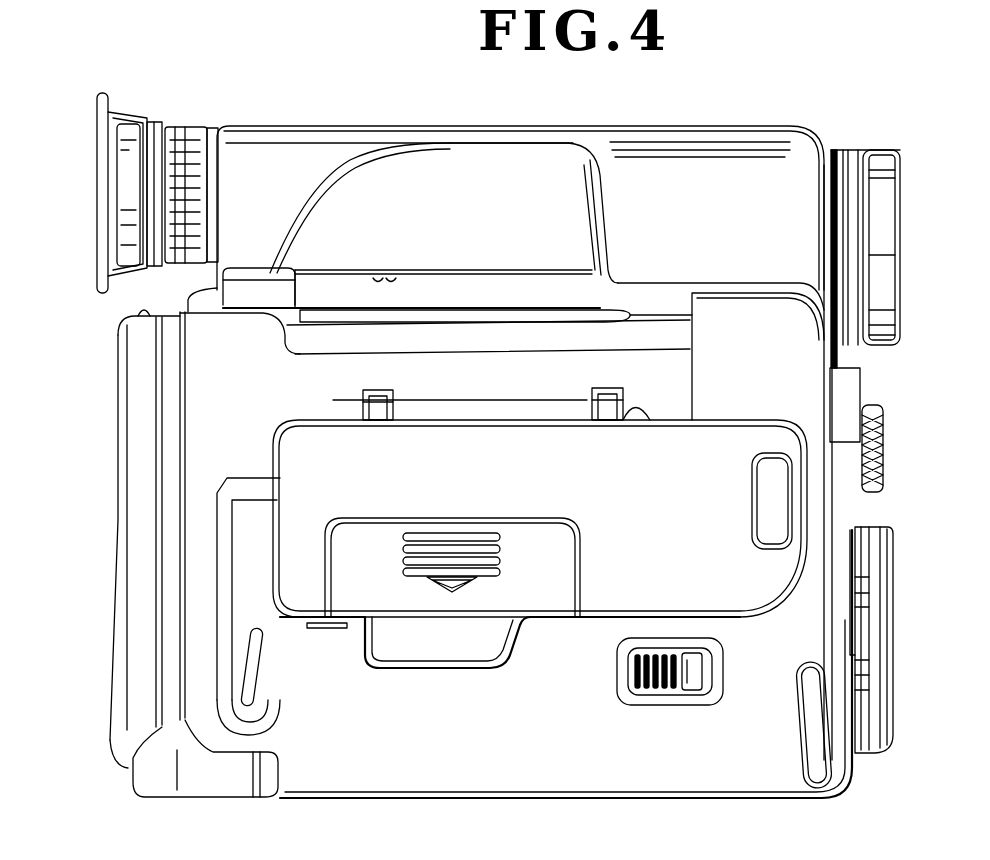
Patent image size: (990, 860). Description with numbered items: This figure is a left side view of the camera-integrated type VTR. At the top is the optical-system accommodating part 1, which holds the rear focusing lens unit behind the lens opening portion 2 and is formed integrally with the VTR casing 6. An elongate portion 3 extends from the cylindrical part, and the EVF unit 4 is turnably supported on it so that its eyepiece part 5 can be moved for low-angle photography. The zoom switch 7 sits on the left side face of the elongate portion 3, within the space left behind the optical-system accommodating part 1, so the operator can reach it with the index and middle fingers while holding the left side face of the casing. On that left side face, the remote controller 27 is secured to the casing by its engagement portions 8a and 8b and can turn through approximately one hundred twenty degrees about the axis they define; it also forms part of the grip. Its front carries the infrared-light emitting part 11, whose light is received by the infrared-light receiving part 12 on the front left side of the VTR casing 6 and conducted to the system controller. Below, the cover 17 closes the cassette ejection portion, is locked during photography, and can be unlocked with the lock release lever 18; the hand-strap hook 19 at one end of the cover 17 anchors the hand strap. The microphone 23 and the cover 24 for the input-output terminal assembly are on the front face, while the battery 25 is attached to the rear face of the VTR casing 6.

The optical-system accommodating part 1 is at (770, 183).
The lens opening portion 2 is at (885, 265).
The elongate portion 3 is at (520, 185).
The EVF unit 4 is at (265, 155).
The eyepiece part 5 is at (120, 183).
The VTR casing 6 is at (810, 398).
The zoom switch 7 is at (343, 288).
The engagement portion 8a is at (600, 405).
The engagement portion 8b is at (365, 410).
The infrared-light emitting part 11 is at (780, 522).
The infrared-light receiving part 12 is at (855, 380).
The cover 17 is at (740, 760).
The lock release lever 18 is at (688, 690).
The hand-strap hook 19 is at (250, 680).
The microphone 23 is at (885, 462).
The cover 24 is at (875, 630).
The battery 25 is at (140, 388).
The remote controller 27 is at (770, 575).